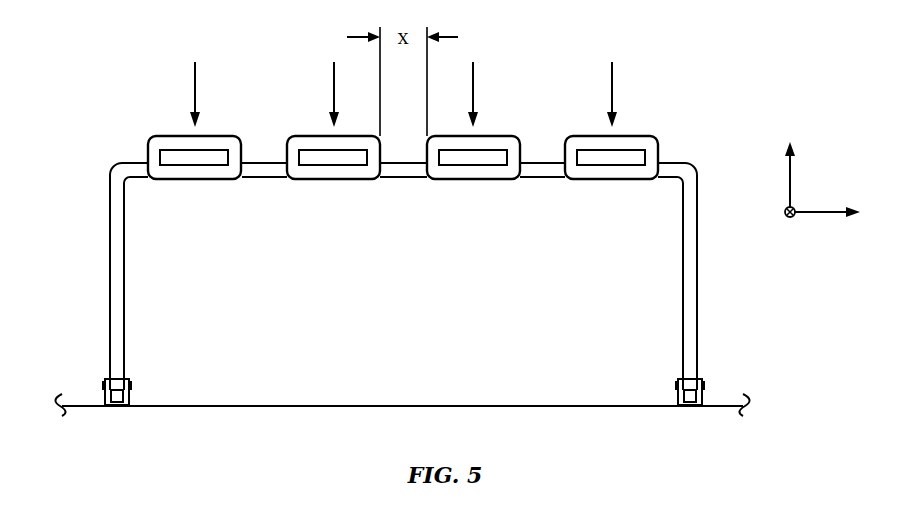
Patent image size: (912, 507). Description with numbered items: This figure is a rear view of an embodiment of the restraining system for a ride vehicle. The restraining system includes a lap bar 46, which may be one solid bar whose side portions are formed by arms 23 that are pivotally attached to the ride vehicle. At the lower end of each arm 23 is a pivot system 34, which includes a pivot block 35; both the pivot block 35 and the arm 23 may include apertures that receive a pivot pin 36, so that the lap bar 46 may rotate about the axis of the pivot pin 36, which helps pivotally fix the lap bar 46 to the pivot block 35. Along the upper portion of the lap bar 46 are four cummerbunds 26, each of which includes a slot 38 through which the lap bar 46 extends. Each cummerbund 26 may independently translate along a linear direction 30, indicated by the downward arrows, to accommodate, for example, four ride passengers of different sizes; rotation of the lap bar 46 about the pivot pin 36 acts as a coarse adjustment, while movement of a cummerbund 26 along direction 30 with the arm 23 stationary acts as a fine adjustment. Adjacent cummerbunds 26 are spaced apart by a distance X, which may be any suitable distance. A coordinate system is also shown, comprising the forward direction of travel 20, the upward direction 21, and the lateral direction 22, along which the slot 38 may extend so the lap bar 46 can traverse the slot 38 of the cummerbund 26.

The direction of travel 20 is at (793, 218).
The upward direction 21 is at (791, 180).
The lateral direction 22 is at (829, 211).
The arm 23 is at (110, 272).
The cummerbund 26 is at (333, 180).
The linear direction 30 is at (195, 93).
The pivot system 34 is at (138, 393).
The pivot block 35 is at (117, 407).
The pivot pin 36 is at (104, 381).
The slot 38 is at (197, 157).
The lap bar 46 is at (540, 178).